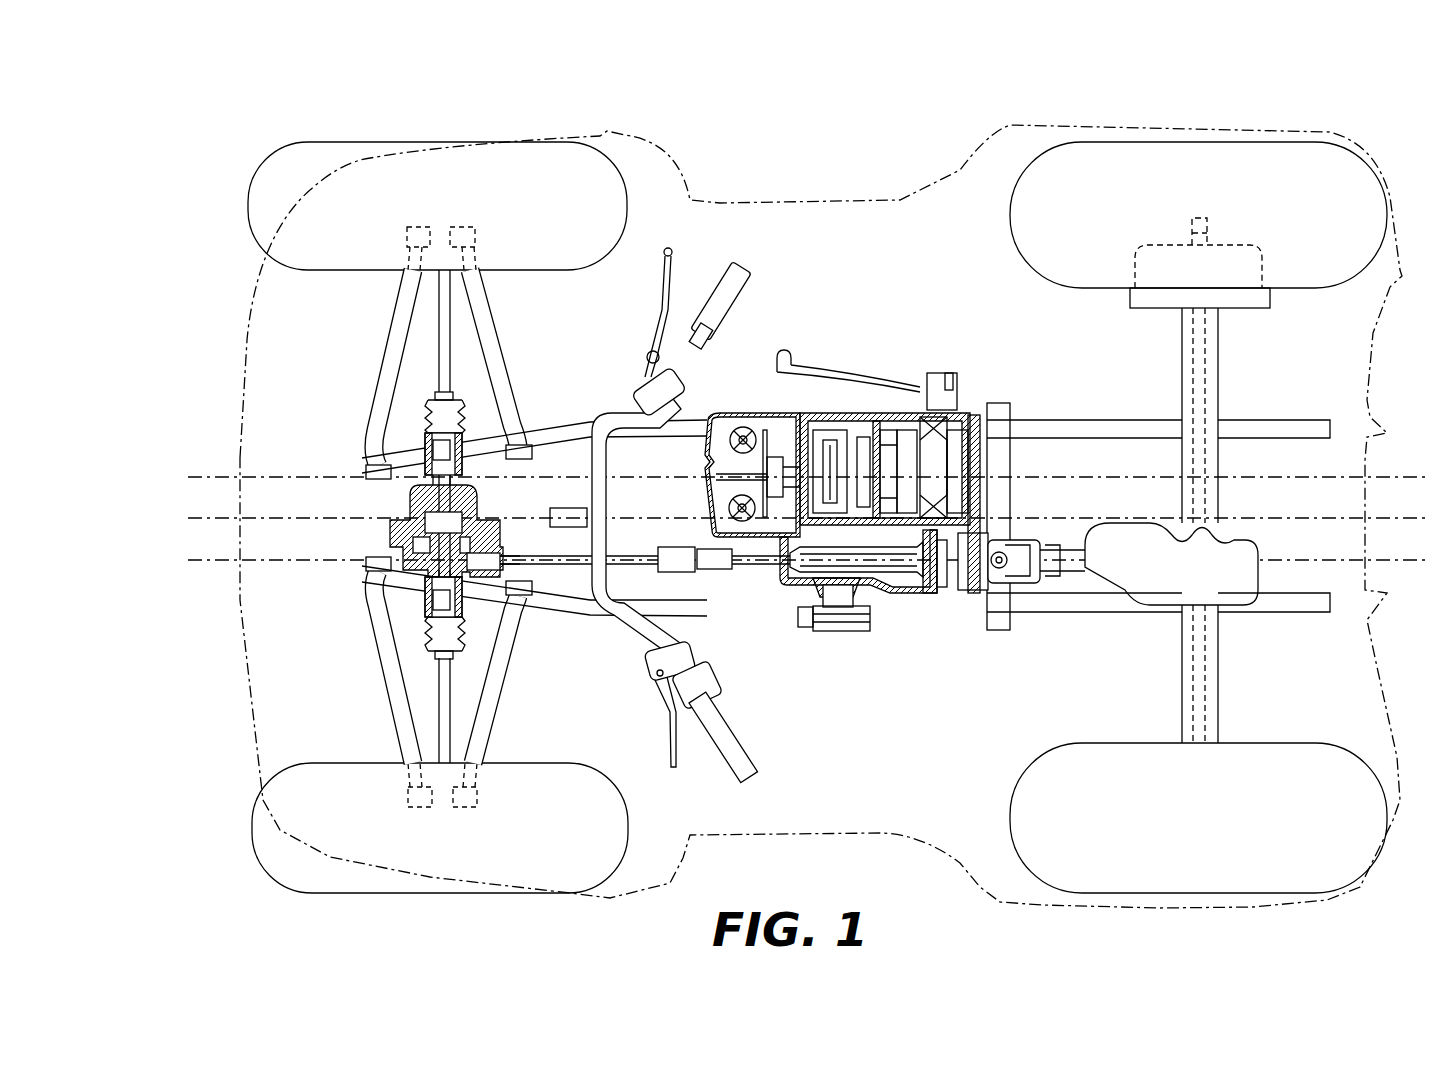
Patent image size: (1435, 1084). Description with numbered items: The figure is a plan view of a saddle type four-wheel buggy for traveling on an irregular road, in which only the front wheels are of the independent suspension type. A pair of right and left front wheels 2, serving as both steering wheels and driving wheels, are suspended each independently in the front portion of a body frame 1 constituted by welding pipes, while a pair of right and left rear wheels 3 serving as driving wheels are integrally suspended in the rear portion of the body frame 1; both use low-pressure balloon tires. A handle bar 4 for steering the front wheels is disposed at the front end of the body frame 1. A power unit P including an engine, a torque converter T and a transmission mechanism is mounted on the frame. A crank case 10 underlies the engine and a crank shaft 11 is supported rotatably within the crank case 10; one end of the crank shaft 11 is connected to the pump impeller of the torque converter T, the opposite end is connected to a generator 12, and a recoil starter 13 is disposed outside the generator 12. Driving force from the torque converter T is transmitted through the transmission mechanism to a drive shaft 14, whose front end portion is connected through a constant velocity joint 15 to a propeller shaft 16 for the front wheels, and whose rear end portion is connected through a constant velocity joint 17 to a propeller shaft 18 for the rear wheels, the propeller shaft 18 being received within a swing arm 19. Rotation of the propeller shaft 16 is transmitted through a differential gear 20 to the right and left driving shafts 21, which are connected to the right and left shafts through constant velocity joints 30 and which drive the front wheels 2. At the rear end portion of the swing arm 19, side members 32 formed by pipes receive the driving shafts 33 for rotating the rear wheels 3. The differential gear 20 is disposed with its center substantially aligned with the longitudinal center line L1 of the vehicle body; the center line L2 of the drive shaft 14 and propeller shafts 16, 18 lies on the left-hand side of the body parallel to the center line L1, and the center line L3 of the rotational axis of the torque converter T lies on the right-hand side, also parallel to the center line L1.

The body frame 1 is at (1124, 430).
The front wheels 2 is at (472, 170).
The rear wheels 3 is at (1270, 165).
The handle bar 4 is at (622, 430).
The crank case 10 is at (890, 420).
The crank shaft 11 is at (788, 470).
The generator 12 is at (920, 443).
The recoil starter 13 is at (965, 470).
The drive shaft 14 is at (886, 575).
The constant velocity joint 15 is at (706, 573).
The propeller shaft for the front wheels 16 is at (568, 562).
The constant velocity joint 17 is at (990, 590).
The propeller shaft for the rear wheels 18 is at (1052, 590).
The swing arm 19 is at (1085, 567).
The differential gear 20 is at (405, 498).
The driving shafts 21 is at (443, 338).
The constant velocity joints 30 is at (440, 417).
The side members 32 is at (465, 413).
The driving shafts 33 is at (1210, 478).
The longitudinal center line L1 is at (208, 518).
The center line L2 is at (245, 578).
The center line L3 is at (245, 462).
The power unit P is at (826, 408).
The torque converter T is at (747, 420).